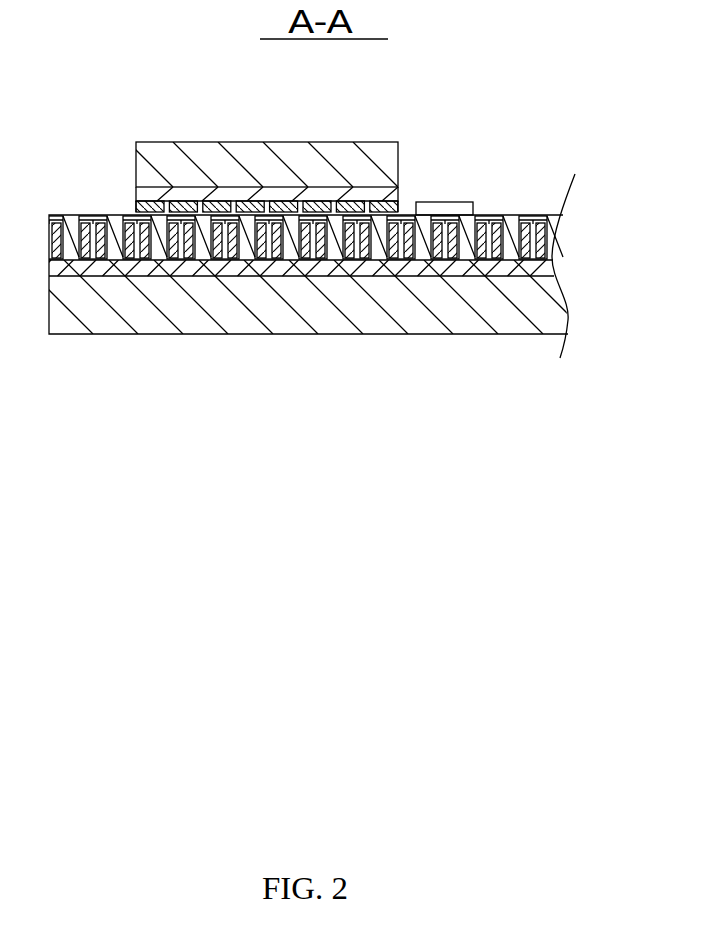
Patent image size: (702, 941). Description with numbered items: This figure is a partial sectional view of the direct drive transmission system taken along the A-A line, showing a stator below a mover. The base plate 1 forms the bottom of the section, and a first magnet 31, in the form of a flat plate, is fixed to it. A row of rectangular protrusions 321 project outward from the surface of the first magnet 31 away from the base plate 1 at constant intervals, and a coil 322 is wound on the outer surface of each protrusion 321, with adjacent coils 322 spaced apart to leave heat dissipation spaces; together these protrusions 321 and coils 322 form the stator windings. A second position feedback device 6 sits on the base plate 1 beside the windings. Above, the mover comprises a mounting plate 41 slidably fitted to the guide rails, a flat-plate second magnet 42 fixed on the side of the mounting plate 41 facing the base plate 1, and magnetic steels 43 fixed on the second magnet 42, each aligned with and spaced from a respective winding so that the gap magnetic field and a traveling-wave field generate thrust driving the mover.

The base plate 1 is at (268, 300).
The first magnet 31 is at (176, 258).
The protrusion 321 is at (384, 258).
The coil 322 is at (86, 258).
The mounting plate 41 is at (363, 165).
The second magnet 42 is at (274, 197).
The magnetic steel 43 is at (185, 206).
The second position feedback device 6 is at (440, 202).